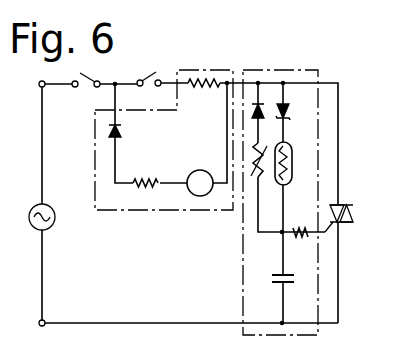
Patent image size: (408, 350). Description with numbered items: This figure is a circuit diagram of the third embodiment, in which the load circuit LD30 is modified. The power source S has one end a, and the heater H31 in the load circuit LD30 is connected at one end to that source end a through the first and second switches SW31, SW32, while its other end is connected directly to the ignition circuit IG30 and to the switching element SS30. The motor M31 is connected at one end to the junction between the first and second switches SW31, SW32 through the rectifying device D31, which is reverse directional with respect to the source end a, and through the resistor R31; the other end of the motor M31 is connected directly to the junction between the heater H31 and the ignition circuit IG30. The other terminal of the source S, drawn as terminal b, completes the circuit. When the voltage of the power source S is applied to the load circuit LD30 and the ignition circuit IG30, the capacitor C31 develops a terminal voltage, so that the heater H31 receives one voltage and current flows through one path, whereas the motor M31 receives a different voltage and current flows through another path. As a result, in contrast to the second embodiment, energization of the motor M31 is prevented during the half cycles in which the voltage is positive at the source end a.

The first switch SW31 is at (72, 95).
The second switch SW32 is at (163, 65).
The heater H31 is at (203, 99).
The rectifying device D31 is at (134, 135).
The resistor R31 is at (145, 172).
The motor M31 is at (200, 172).
The load circuit LD30 is at (204, 68).
The ignition circuit IG30 is at (318, 121).
The switching element SS30 is at (359, 206).
The capacitor C31 is at (268, 280).
The power source S is at (36, 207).
The one end of the power source a is at (33, 82).
The terminal b is at (32, 323).